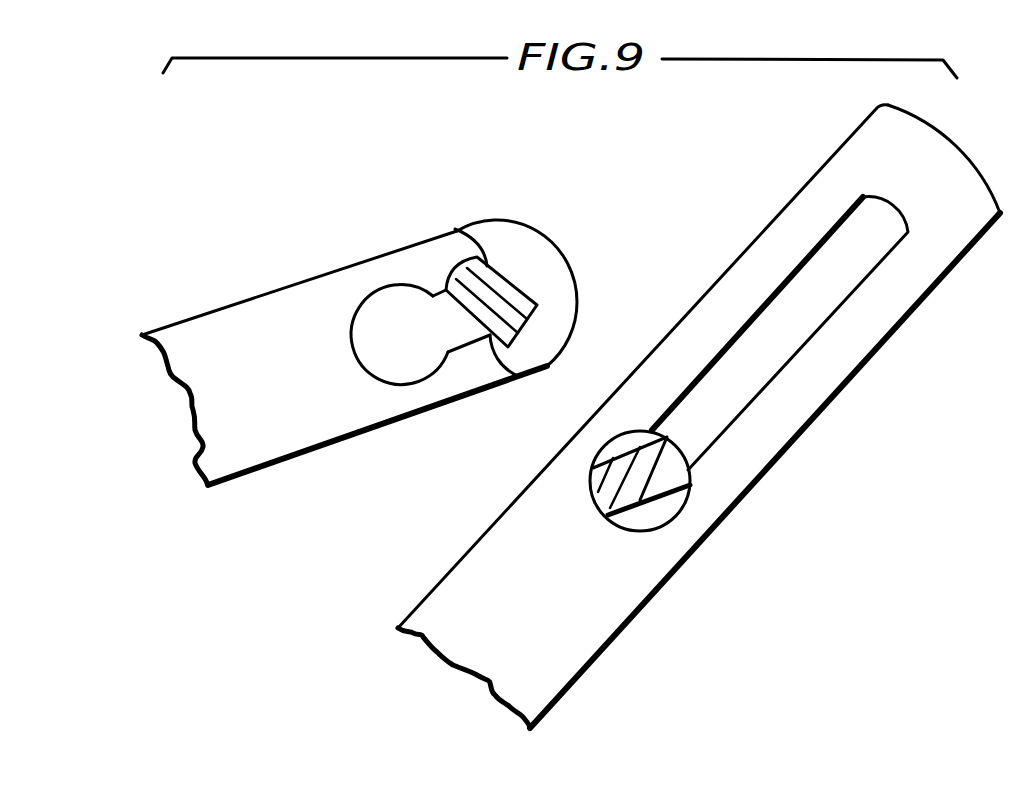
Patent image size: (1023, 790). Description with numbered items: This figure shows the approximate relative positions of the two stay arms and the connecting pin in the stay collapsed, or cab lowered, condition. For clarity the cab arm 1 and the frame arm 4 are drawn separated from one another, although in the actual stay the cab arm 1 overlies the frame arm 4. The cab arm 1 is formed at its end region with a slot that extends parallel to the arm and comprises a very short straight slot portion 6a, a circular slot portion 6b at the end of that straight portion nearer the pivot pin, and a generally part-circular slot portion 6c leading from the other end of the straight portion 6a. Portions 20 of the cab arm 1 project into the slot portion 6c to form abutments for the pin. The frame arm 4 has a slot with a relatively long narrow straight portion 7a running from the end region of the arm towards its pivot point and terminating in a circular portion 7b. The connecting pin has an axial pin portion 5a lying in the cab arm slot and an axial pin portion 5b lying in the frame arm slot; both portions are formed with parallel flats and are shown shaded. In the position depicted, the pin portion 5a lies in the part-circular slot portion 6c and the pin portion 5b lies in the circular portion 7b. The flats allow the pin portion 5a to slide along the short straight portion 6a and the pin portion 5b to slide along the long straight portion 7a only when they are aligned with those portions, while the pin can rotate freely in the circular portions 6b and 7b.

The cab arm 1 is at (297, 297).
The frame arm 4 is at (593, 605).
The pin portion 5a is at (519, 305).
The pin portion 5b is at (660, 485).
The straight slot portion 6a is at (457, 323).
The circular slot portion 6b is at (390, 363).
The part-circular slot portion 6c is at (506, 270).
The straight slot portion 7a is at (762, 357).
The circular slot portion 7b is at (645, 520).
The projecting portions 20 is at (453, 229).